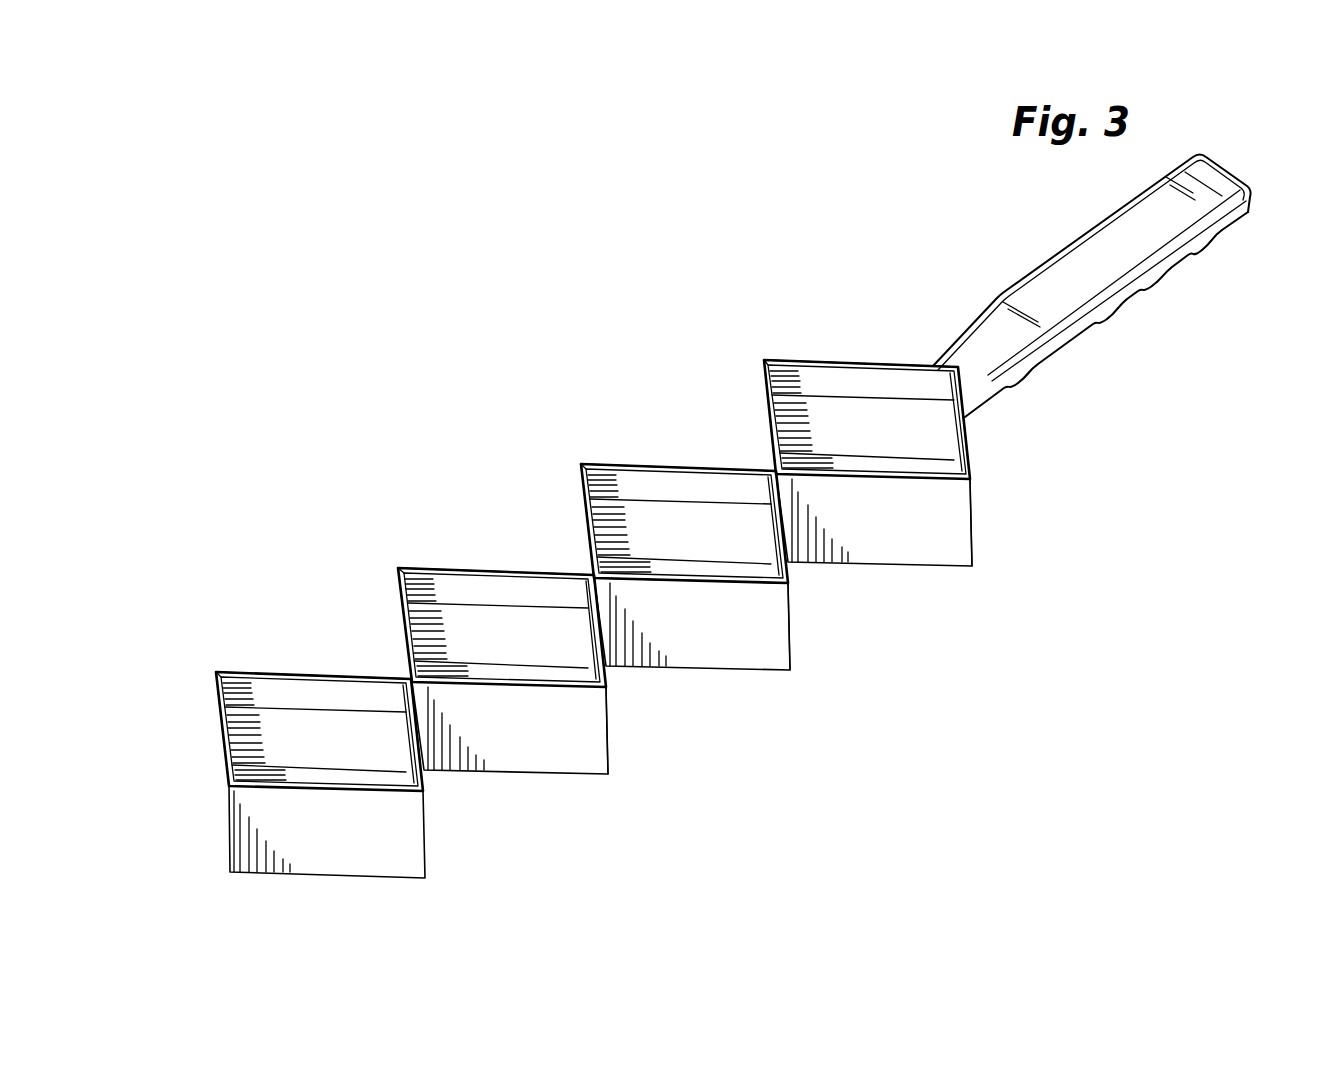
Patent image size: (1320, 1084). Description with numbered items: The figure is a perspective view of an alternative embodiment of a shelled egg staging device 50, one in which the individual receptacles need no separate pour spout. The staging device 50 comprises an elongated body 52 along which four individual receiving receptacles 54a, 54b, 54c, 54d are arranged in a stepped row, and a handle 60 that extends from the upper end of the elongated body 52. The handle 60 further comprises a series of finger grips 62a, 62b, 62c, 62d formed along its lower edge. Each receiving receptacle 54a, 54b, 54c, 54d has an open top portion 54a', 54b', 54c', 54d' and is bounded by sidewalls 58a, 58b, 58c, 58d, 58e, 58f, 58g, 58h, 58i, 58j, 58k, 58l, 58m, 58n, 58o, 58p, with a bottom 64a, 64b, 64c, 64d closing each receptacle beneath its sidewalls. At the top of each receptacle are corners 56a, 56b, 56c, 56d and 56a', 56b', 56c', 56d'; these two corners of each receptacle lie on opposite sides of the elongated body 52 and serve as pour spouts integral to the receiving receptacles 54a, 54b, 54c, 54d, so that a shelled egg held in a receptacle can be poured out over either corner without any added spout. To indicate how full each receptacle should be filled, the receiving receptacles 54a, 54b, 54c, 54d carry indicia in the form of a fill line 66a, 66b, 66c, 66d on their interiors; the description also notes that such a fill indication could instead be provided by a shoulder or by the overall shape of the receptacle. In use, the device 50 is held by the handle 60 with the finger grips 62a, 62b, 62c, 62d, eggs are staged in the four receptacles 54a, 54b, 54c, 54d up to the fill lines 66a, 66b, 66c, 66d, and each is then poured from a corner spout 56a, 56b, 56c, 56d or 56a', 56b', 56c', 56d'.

The shelled egg staging device 50 is at (973, 672).
The elongated body 52 is at (974, 446).
The receiving receptacle 54a is at (296, 836).
The receiving receptacle 54b is at (526, 753).
The receiving receptacle 54c is at (736, 654).
The receiving receptacle 54d is at (914, 538).
The top portion 54a' is at (313, 628).
The top portion 54b' is at (496, 554).
The top portion 54c' is at (678, 452).
The top portion 54d' is at (861, 312).
The corner 56a is at (376, 754).
The corner 56b is at (551, 647).
The corner 56c is at (729, 532).
The corner 56d is at (920, 430).
The corner 56a' is at (179, 645).
The corner 56b' is at (340, 537).
The corner 56c' is at (544, 443).
The corner 56d' is at (723, 342).
The sidewall 58a is at (253, 857).
The sidewall 58b is at (217, 743).
The sidewall 58c is at (313, 688).
The sidewall 58d is at (413, 798).
The sidewall 58e is at (609, 774).
The sidewall 58f is at (403, 636).
The sidewall 58g is at (490, 590).
The sidewall 58h is at (609, 727).
The sidewall 58i is at (782, 648).
The sidewall 58j is at (592, 572).
The sidewall 58k is at (735, 478).
The sidewall 58l is at (748, 586).
The sidewall 58m is at (965, 514).
The sidewall 58n is at (767, 443).
The sidewall 58o is at (890, 385).
The sidewall 58p is at (954, 457).
The handle 60 is at (1202, 158).
The finger grip 62a is at (1052, 354).
The finger grip 62b is at (1118, 313).
The finger grip 62c is at (1152, 288).
The finger grip 62d is at (1200, 245).
The bottom 64a is at (317, 777).
The bottom 64b is at (502, 672).
The bottom 64c is at (667, 567).
The bottom 64d is at (862, 465).
The fill line 66a is at (255, 707).
The fill line 66b is at (452, 603).
The fill line 66c is at (637, 498).
The fill line 66d is at (833, 395).